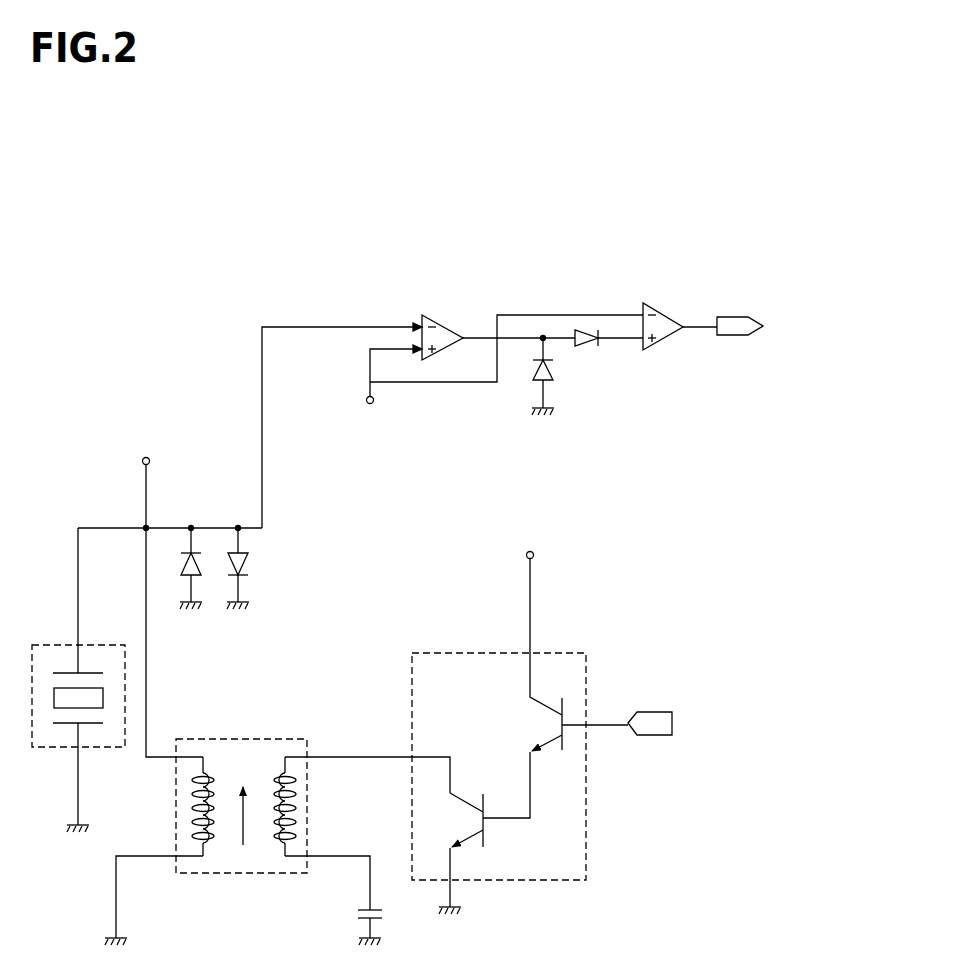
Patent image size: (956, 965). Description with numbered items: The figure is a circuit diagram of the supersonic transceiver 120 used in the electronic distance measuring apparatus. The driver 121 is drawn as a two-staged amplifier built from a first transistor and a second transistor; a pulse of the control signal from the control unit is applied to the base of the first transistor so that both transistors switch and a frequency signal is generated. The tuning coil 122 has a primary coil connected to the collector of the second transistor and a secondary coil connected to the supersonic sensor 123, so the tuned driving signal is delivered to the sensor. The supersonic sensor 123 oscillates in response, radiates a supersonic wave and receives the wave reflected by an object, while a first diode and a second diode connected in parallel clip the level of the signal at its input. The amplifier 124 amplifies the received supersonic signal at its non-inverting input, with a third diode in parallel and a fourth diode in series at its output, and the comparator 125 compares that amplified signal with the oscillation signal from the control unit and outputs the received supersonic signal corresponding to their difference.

The supersonic transceiver 120 is at (734, 207).
The driver 121 is at (482, 653).
The tuning coil 122 is at (232, 738).
The supersonic sensor 123 is at (59, 645).
The amplifier 124 is at (443, 322).
The comparator 125 is at (666, 308).